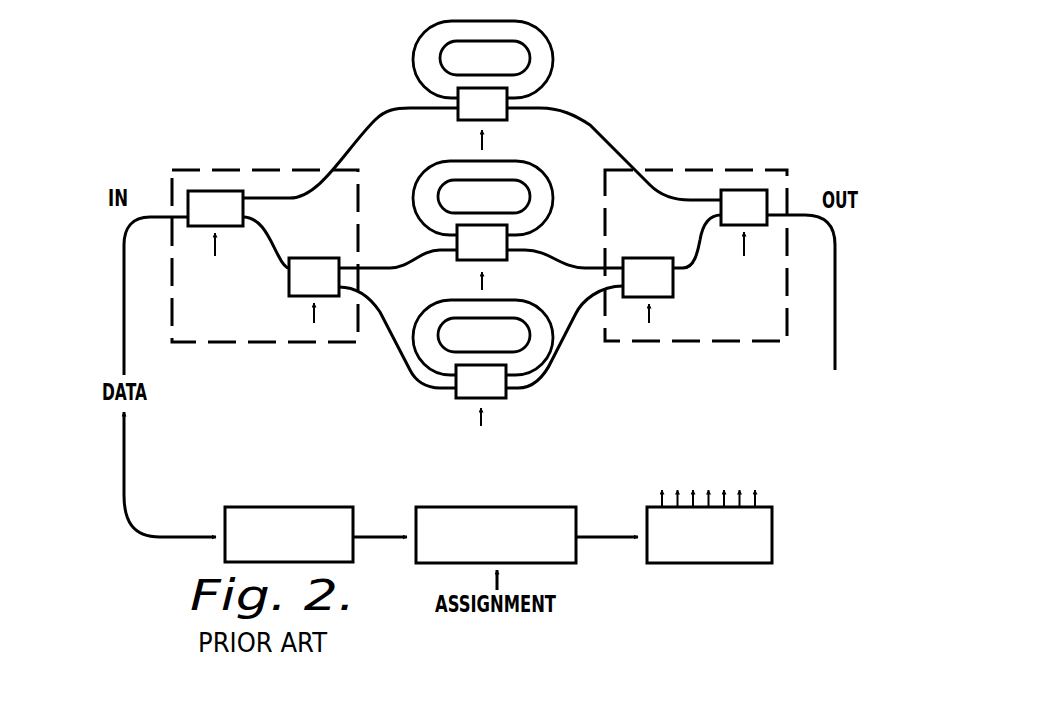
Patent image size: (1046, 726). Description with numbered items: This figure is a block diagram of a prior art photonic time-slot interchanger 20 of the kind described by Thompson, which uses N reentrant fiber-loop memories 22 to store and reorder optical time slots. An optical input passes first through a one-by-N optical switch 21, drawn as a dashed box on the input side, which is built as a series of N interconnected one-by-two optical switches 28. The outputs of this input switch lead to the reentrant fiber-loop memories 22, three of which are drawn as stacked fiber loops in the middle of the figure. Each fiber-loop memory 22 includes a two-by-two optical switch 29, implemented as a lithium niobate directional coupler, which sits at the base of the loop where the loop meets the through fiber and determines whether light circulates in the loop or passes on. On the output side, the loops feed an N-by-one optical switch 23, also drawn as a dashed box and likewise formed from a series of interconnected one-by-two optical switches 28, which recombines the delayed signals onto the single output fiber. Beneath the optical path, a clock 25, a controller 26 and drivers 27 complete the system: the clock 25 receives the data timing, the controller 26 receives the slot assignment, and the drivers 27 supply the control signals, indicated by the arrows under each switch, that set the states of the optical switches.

The photonic time-slot interchanger 20 is at (479, 213).
The 1×N optical switch 21 is at (252, 229).
The reentrant fiber-loop memory 22 is at (545, 47).
The N×1 optical switch 23 is at (685, 177).
The clock 25 is at (297, 506).
The controller 26 is at (495, 505).
The drivers 27 is at (715, 565).
The 1×2 optical switch 28 is at (210, 191).
The 2×2 optical switch 29 is at (498, 121).